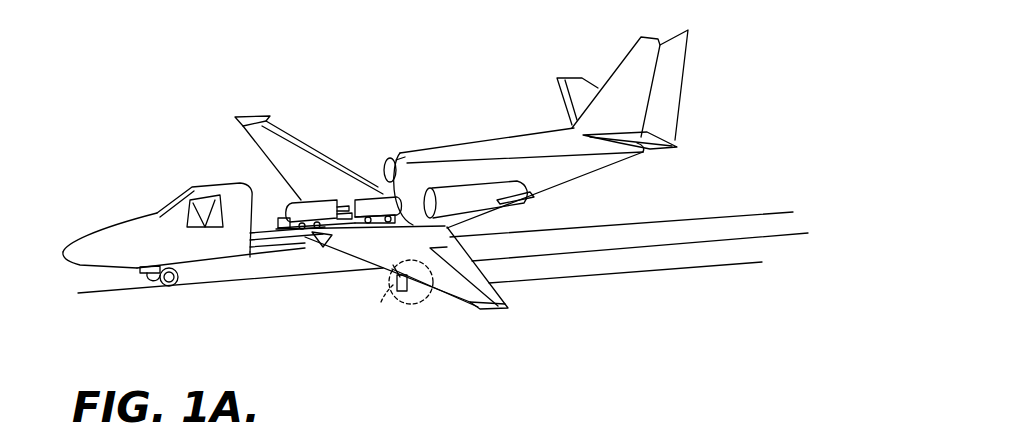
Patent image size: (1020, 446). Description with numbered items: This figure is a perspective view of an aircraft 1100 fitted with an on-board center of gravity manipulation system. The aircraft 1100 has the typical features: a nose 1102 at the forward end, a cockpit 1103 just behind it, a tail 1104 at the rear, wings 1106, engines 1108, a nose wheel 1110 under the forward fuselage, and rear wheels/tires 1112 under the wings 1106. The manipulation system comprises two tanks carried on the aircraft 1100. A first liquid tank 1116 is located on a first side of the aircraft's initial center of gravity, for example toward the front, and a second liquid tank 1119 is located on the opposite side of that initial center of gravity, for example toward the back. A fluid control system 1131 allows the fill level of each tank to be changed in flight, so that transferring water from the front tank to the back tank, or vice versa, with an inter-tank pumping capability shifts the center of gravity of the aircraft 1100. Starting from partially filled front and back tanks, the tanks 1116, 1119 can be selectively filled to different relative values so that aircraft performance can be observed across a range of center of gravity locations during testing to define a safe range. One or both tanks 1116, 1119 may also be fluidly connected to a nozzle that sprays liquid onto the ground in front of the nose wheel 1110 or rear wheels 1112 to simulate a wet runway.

The aircraft 1100 is at (573, 312).
The nose 1102 is at (85, 231).
The cockpit 1103 is at (164, 206).
The tail 1104 is at (644, 153).
The wings 1106 is at (291, 126).
The engines 1108 is at (473, 192).
The nose wheel 1110 is at (168, 286).
The rear wheels/tires 1112 is at (400, 292).
The first liquid tank 1116 is at (365, 197).
The second liquid tank 1119 is at (300, 201).
The fluid control system 1131 is at (327, 237).